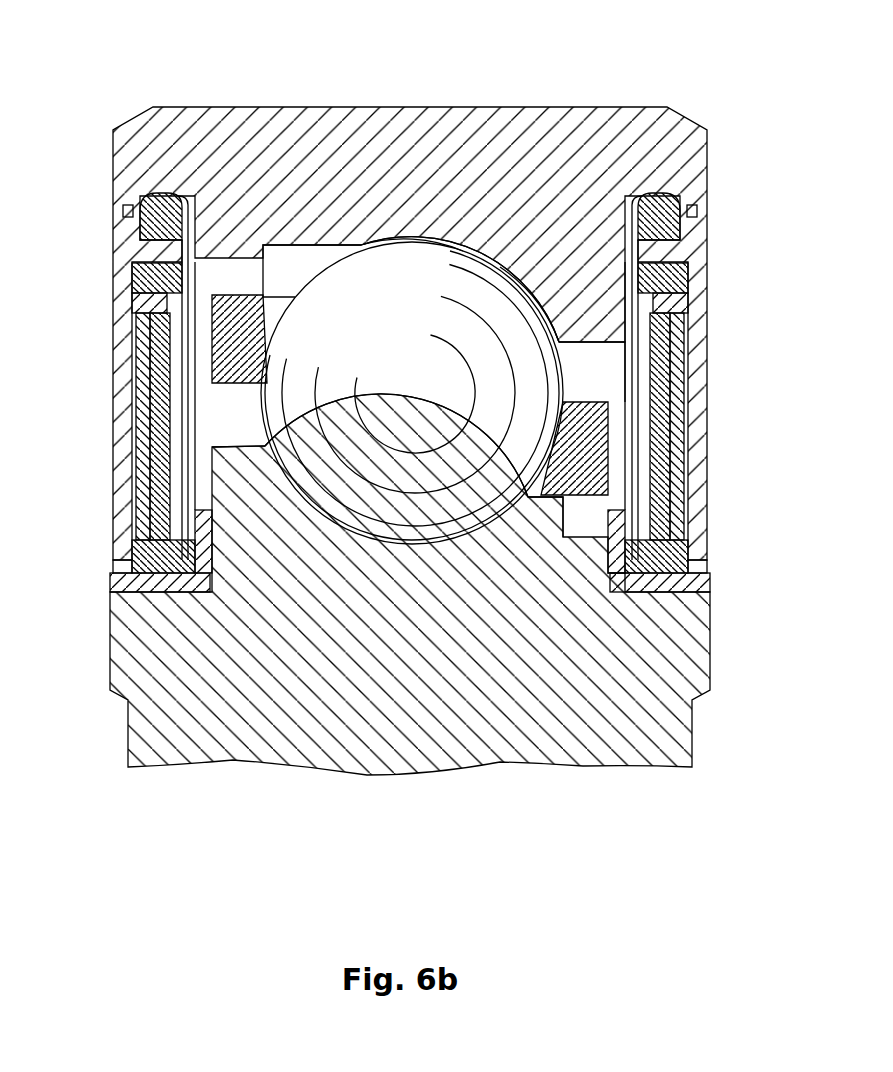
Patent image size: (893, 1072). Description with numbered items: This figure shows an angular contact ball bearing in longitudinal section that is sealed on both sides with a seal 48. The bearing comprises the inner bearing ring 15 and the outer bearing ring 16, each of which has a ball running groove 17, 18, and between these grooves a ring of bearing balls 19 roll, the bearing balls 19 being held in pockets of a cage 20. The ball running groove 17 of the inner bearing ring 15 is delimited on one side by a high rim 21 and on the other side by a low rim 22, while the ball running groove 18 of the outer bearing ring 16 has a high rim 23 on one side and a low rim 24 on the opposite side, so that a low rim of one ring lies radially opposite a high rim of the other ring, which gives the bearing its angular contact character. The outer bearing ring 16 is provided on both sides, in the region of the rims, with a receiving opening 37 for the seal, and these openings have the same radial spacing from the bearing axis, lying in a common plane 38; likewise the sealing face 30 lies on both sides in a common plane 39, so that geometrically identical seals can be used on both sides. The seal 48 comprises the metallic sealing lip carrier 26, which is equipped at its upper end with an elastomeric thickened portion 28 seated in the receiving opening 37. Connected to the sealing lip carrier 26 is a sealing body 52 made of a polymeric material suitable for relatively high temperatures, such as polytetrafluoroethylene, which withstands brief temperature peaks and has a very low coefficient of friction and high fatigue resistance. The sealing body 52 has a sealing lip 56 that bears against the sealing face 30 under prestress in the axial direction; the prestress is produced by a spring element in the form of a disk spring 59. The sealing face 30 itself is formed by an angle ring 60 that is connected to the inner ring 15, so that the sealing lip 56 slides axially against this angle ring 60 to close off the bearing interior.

The inner bearing ring 15 is at (430, 755).
The outer bearing ring 16 is at (430, 122).
The ball running groove 17 is at (362, 547).
The ball running groove 18 is at (463, 245).
The bearing balls 19 is at (427, 401).
The cage 20 is at (591, 408).
The high rim 21 is at (257, 466).
The low rim 22 is at (517, 545).
The high rim 23 is at (590, 318).
The low rim 24 is at (359, 243).
The sealing lip carrier 26 is at (130, 349).
The elastomeric thickened portion 28 is at (128, 218).
The sealing face 30 is at (214, 552).
The plane 39 is at (600, 550).
The receiving opening 37 is at (176, 194).
The plane 38 is at (653, 192).
The seal 48 is at (102, 405).
The sealing body 52 is at (156, 471).
The sealing lip 56 is at (168, 576).
The disk spring 59 is at (144, 442).
The angle ring 60 is at (112, 583).